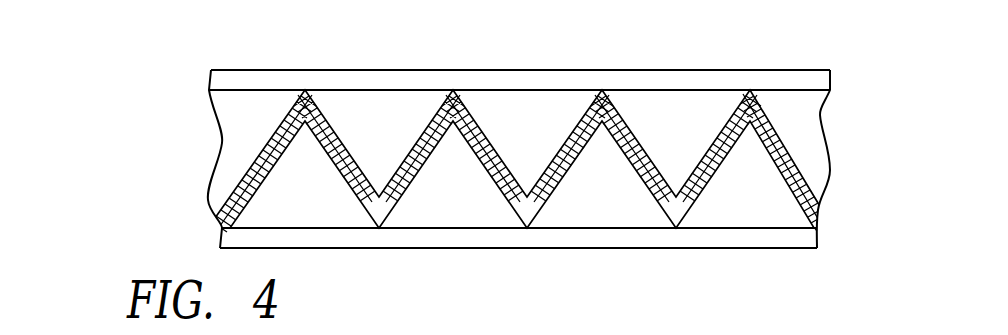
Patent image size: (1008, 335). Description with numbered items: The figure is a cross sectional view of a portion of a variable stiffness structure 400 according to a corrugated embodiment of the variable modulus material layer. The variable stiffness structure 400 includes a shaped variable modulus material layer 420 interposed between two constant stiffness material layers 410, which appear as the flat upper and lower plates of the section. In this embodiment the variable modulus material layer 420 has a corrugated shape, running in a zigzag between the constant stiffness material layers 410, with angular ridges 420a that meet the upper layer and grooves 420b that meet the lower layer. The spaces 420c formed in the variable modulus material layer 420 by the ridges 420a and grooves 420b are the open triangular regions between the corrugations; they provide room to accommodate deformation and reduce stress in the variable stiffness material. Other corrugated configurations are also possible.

The variable stiffness structure 400 is at (200, 75).
The constant stiffness material layer 410 is at (805, 73).
The variable modulus material layer 420 is at (552, 152).
The angular ridge 420a is at (453, 90).
The groove 420b is at (378, 167).
The space 420c is at (377, 133).